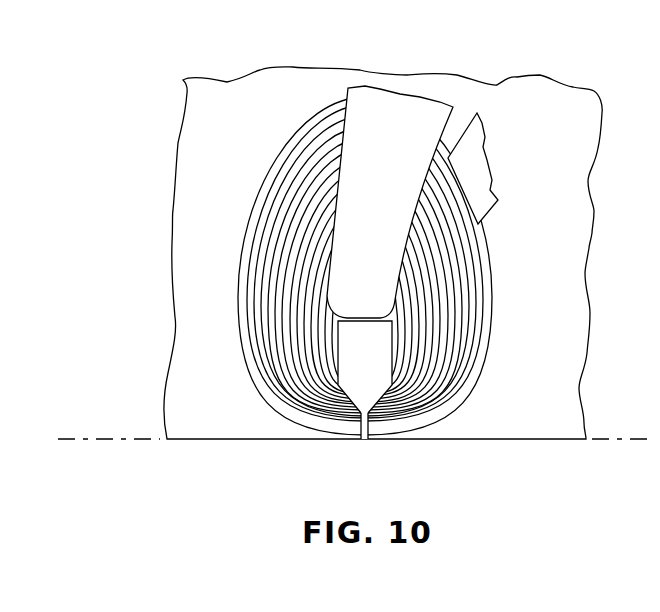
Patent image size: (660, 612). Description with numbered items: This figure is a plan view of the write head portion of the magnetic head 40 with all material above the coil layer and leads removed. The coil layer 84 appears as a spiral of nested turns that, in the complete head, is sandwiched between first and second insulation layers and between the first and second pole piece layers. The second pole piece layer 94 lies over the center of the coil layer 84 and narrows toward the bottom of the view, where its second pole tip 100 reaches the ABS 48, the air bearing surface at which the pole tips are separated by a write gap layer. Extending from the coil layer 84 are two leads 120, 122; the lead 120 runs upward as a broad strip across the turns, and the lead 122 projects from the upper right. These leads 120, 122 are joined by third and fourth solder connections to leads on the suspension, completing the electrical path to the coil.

The magnetic head 40 is at (507, 253).
The ABS 48 is at (110, 440).
The coil layer 84 is at (465, 342).
The second pole piece layer 94 is at (375, 368).
The second pole tip 100 is at (363, 443).
The lead 120 is at (393, 198).
The lead 122 is at (484, 160).